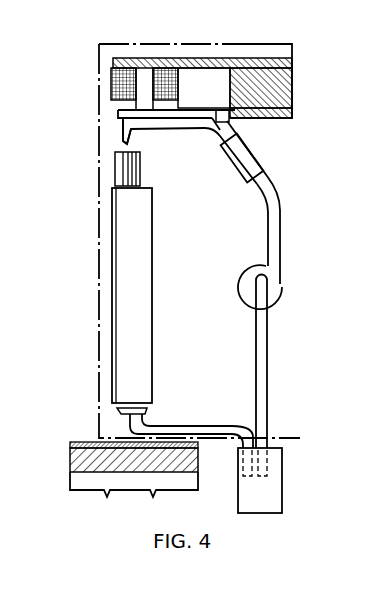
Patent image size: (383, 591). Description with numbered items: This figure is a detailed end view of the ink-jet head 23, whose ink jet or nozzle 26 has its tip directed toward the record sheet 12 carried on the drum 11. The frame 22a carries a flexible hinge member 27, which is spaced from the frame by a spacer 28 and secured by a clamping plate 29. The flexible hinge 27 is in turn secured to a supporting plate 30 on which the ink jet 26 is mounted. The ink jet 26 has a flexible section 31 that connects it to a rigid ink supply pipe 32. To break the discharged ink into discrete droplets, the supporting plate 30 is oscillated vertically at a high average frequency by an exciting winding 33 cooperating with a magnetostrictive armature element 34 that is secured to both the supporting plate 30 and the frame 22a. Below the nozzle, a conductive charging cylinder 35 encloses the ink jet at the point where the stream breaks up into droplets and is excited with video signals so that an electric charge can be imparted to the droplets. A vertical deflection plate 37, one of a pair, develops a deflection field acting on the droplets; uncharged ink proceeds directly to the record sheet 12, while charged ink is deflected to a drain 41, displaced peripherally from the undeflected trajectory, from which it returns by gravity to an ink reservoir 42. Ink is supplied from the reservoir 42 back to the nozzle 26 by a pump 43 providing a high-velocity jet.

The drum 11 is at (70, 463).
The record sheet 12 is at (68, 443).
The frame 22a is at (278, 52).
The ink-jet head 23 is at (110, 43).
The ink jet or nozzle 26 is at (170, 127).
The flexible hinge member 27 is at (225, 121).
The spacer 28 is at (230, 90).
The clamping plate 29 is at (293, 114).
The supporting plate 30 is at (120, 121).
The flexible section 31 is at (233, 162).
The rigid ink supply pipe 32 is at (268, 226).
The exciting winding 33 is at (108, 87).
The magnetostrictive armature element 34 is at (123, 107).
The conductive charging cylinder 35 is at (120, 165).
The vertical deflection plate 37 is at (127, 260).
The drain 41 is at (143, 412).
The ink reservoir 42 is at (272, 491).
The pump 43 is at (281, 276).